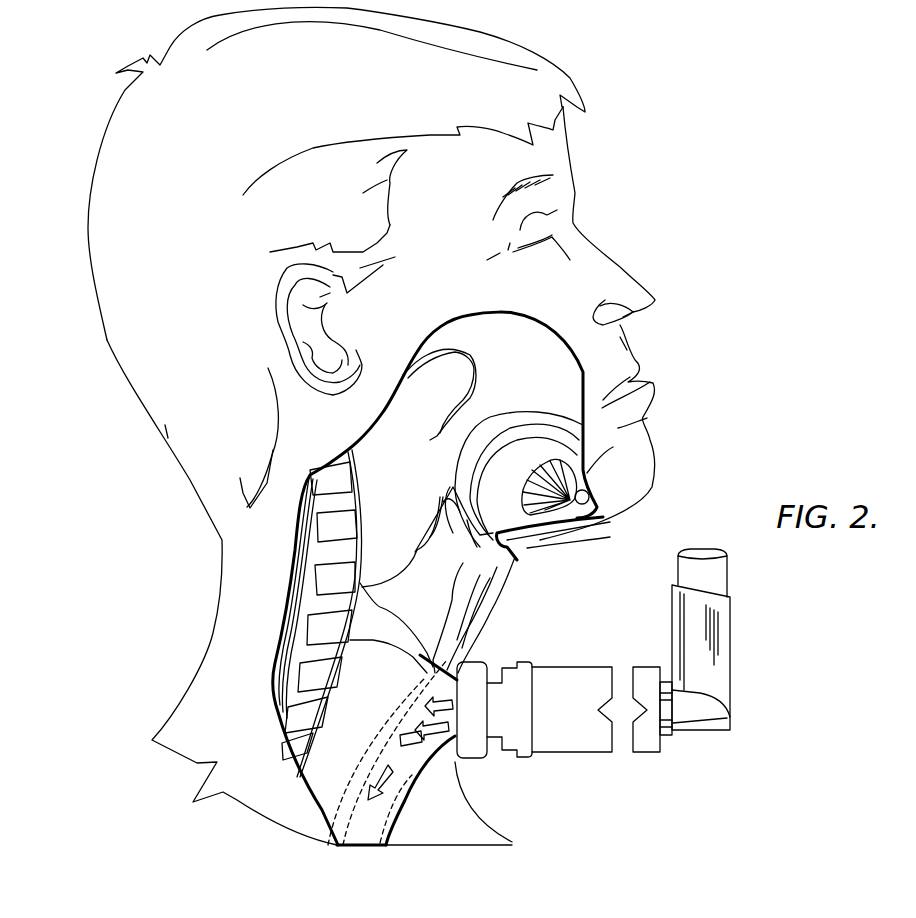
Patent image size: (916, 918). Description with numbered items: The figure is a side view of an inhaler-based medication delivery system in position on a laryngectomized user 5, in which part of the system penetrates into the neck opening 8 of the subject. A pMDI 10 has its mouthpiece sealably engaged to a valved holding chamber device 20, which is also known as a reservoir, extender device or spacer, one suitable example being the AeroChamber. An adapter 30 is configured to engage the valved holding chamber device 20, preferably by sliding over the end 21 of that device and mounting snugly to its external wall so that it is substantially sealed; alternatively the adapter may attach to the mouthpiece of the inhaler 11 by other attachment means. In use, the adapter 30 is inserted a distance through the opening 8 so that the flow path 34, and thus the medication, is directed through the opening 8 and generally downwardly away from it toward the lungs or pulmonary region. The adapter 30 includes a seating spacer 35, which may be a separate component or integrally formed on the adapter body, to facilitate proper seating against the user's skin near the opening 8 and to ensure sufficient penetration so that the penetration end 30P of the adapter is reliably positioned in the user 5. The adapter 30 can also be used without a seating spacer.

The user 5 is at (215, 514).
The opening 8 is at (437, 653).
The pMDI 10 is at (723, 672).
The inhaler 11 is at (665, 733).
The valved holding chamber device 20 is at (575, 668).
The end of the valved holding chamber device 21 is at (497, 690).
The adapter 30 is at (469, 765).
The penetration end 30P is at (400, 732).
The flow path 34 is at (417, 723).
The seating spacer 35 is at (472, 676).